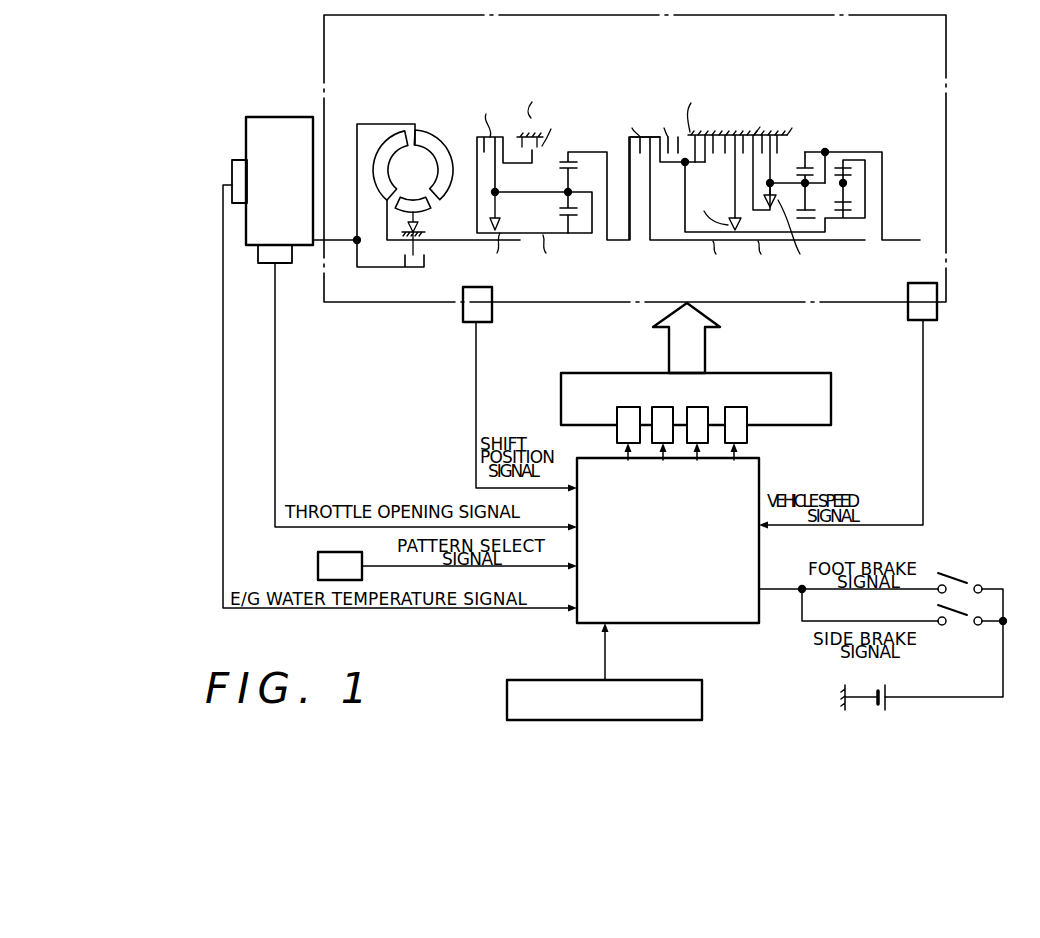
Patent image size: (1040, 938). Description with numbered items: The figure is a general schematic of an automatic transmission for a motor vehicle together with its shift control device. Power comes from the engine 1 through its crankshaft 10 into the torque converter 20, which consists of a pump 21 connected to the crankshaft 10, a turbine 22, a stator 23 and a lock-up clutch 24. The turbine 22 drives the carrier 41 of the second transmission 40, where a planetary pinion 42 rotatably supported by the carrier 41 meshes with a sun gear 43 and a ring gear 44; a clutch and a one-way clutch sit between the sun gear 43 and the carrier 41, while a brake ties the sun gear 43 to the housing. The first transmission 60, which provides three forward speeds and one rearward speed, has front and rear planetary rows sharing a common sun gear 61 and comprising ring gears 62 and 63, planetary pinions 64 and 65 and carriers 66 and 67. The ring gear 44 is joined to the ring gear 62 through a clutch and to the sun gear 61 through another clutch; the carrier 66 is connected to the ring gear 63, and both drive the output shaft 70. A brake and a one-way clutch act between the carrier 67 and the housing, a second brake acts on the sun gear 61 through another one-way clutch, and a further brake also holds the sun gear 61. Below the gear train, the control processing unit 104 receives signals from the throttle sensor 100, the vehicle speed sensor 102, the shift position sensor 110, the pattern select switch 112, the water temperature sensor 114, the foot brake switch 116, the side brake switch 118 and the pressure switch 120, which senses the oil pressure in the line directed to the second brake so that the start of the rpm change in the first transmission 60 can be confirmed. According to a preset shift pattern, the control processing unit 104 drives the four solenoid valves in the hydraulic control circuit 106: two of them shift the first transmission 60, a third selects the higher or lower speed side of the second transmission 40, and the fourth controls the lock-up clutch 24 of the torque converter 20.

The engine 1 is at (270, 117).
The crankshaft 10 is at (338, 243).
The torque converter 20 is at (438, 172).
The pump 21 is at (440, 148).
The turbine 22 is at (390, 160).
The stator 23 is at (428, 209).
The lock-up clutch 24 is at (387, 267).
The second transmission 40 is at (563, 164).
The carrier 41 is at (583, 179).
The planetary pinion 42 is at (561, 170).
The sun gear 43 is at (561, 212).
The ring gear 44 is at (568, 158).
The first transmission 60 is at (765, 164).
The sun gear 61 is at (827, 224).
The ring gear 62 is at (867, 166).
The ring gear 63 is at (828, 150).
The planetary pinion 64 is at (850, 172).
The planetary pinion 65 is at (818, 203).
The carrier 66 is at (850, 205).
The carrier 67 is at (797, 164).
The output shaft 70 is at (891, 241).
The throttle sensor 100 is at (258, 257).
The vehicle speed sensor 102 is at (932, 320).
The control processing unit 104 is at (720, 623).
The hydraulic control circuit 106 is at (831, 406).
The shift position sensor 110 is at (483, 322).
The pattern select switch 112 is at (318, 567).
The water temperature sensor 114 is at (232, 170).
The brake switch 116 is at (967, 580).
The brake switch 118 is at (955, 625).
The pressure switch 120 is at (645, 680).